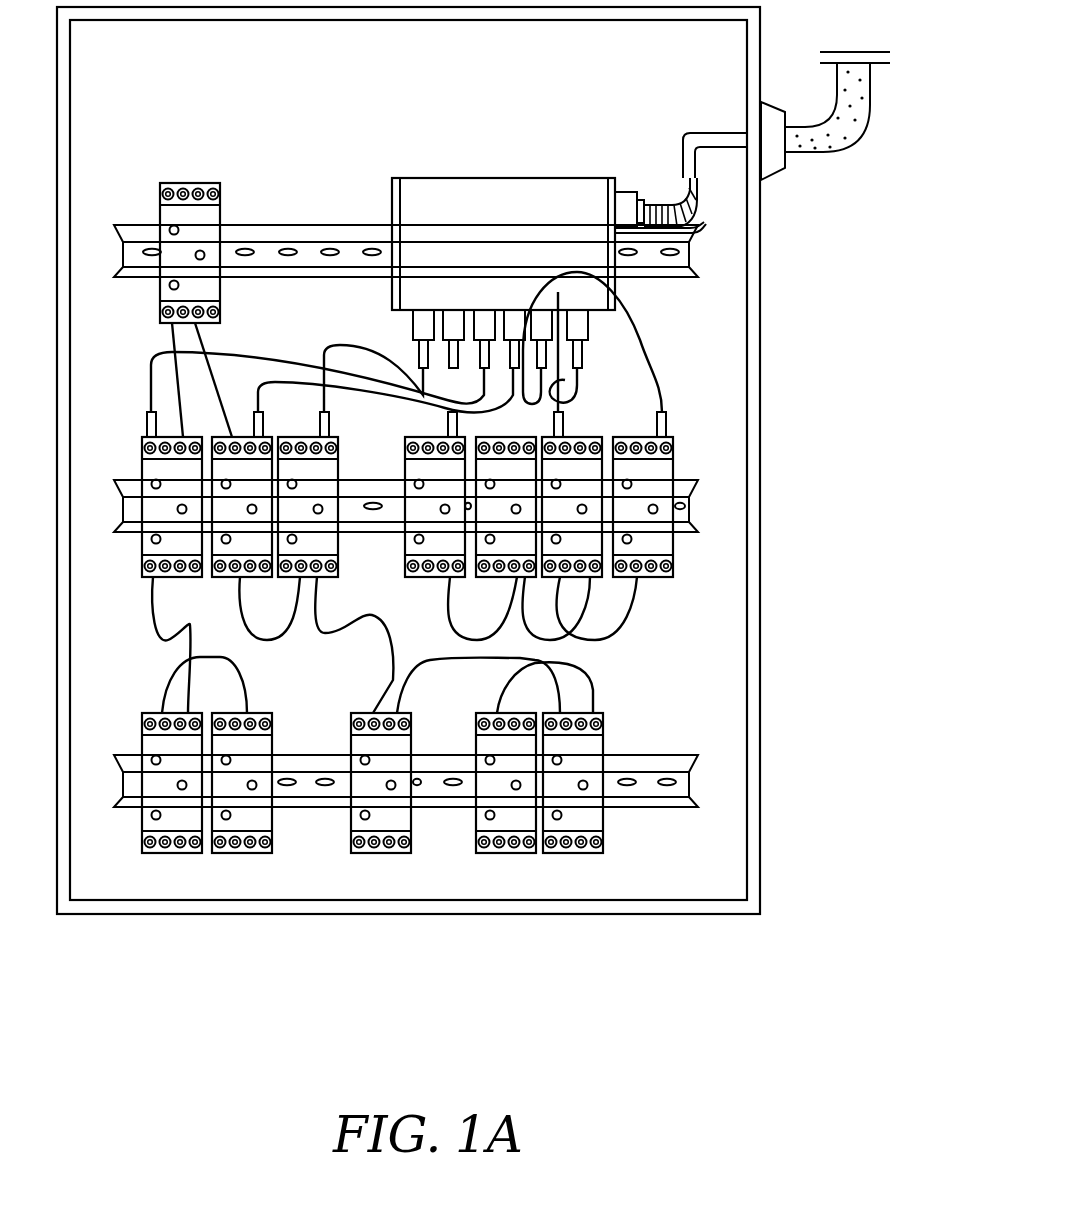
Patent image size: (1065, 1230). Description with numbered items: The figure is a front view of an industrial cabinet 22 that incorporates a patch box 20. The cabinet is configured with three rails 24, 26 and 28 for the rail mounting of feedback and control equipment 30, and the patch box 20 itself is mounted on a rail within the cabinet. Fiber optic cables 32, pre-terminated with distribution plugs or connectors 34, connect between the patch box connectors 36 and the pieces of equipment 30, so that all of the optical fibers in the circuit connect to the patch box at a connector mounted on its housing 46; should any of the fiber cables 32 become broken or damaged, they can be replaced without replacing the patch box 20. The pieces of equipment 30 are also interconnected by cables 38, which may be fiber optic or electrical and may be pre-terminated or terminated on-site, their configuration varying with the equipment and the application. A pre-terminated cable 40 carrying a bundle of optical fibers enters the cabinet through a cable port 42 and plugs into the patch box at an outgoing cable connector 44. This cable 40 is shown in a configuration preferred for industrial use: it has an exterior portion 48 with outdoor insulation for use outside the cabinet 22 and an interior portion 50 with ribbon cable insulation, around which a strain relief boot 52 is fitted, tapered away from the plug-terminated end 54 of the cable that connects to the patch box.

The patch box 20 is at (505, 176).
The industrial cabinet 22 is at (762, 298).
The rail 24 is at (667, 278).
The rail 26 is at (680, 535).
The rail 28 is at (670, 753).
The feedback and control equipment 30 is at (340, 462).
The fiber optic cables 32 is at (324, 350).
The distribution plugs or connectors 34 is at (419, 352).
The patch box connectors 36 is at (406, 318).
The fiber optic or electrical cables 38 is at (207, 336).
The pre-terminated cable 40 is at (826, 150).
The cable port 42 is at (772, 102).
The outgoing cable connector 44 is at (628, 200).
The housing 46 is at (392, 185).
The exterior portion 48 is at (872, 118).
The interior portion 50 is at (690, 130).
The strain relief boot 52 is at (652, 203).
The plug-terminated end 54 is at (705, 229).